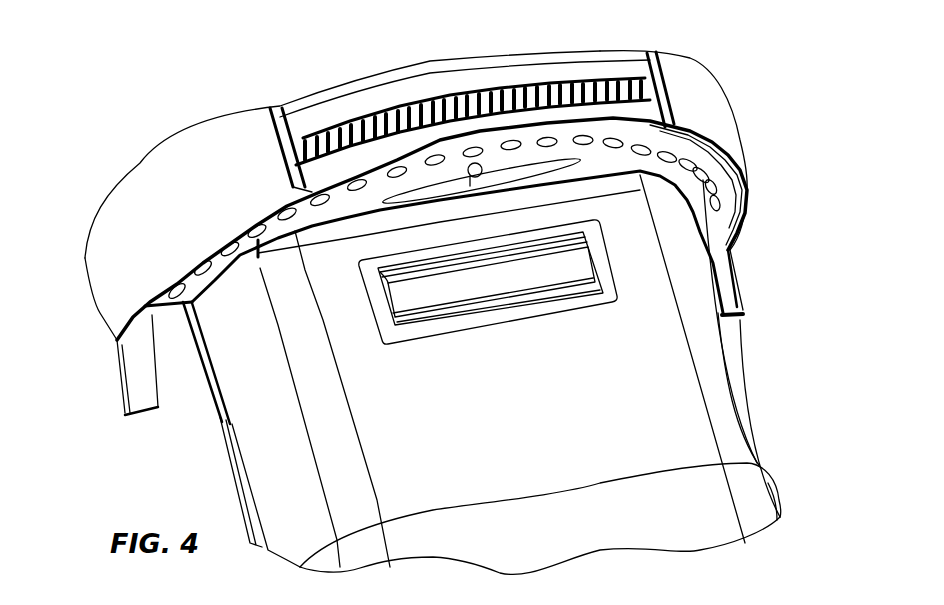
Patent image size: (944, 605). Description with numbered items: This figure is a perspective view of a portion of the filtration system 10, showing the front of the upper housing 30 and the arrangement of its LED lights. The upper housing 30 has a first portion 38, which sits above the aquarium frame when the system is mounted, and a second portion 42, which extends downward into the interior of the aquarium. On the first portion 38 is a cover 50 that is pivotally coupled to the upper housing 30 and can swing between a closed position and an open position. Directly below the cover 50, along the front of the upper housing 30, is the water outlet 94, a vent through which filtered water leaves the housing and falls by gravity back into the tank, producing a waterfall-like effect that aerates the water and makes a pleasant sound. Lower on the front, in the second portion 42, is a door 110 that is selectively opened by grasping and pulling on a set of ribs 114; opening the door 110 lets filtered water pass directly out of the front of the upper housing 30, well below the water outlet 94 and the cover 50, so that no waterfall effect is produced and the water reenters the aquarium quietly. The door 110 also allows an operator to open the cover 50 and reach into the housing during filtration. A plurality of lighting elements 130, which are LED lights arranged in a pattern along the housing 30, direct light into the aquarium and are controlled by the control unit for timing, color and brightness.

The filtration system 10 is at (681, 44).
The upper housing 30 is at (107, 218).
The first portion 38 is at (168, 182).
The second portion 42 is at (268, 467).
The cover 50 is at (423, 88).
The water outlet 94 is at (355, 130).
The door 110 is at (485, 282).
The ribs 114 is at (437, 267).
The lighting elements 130 is at (717, 180).